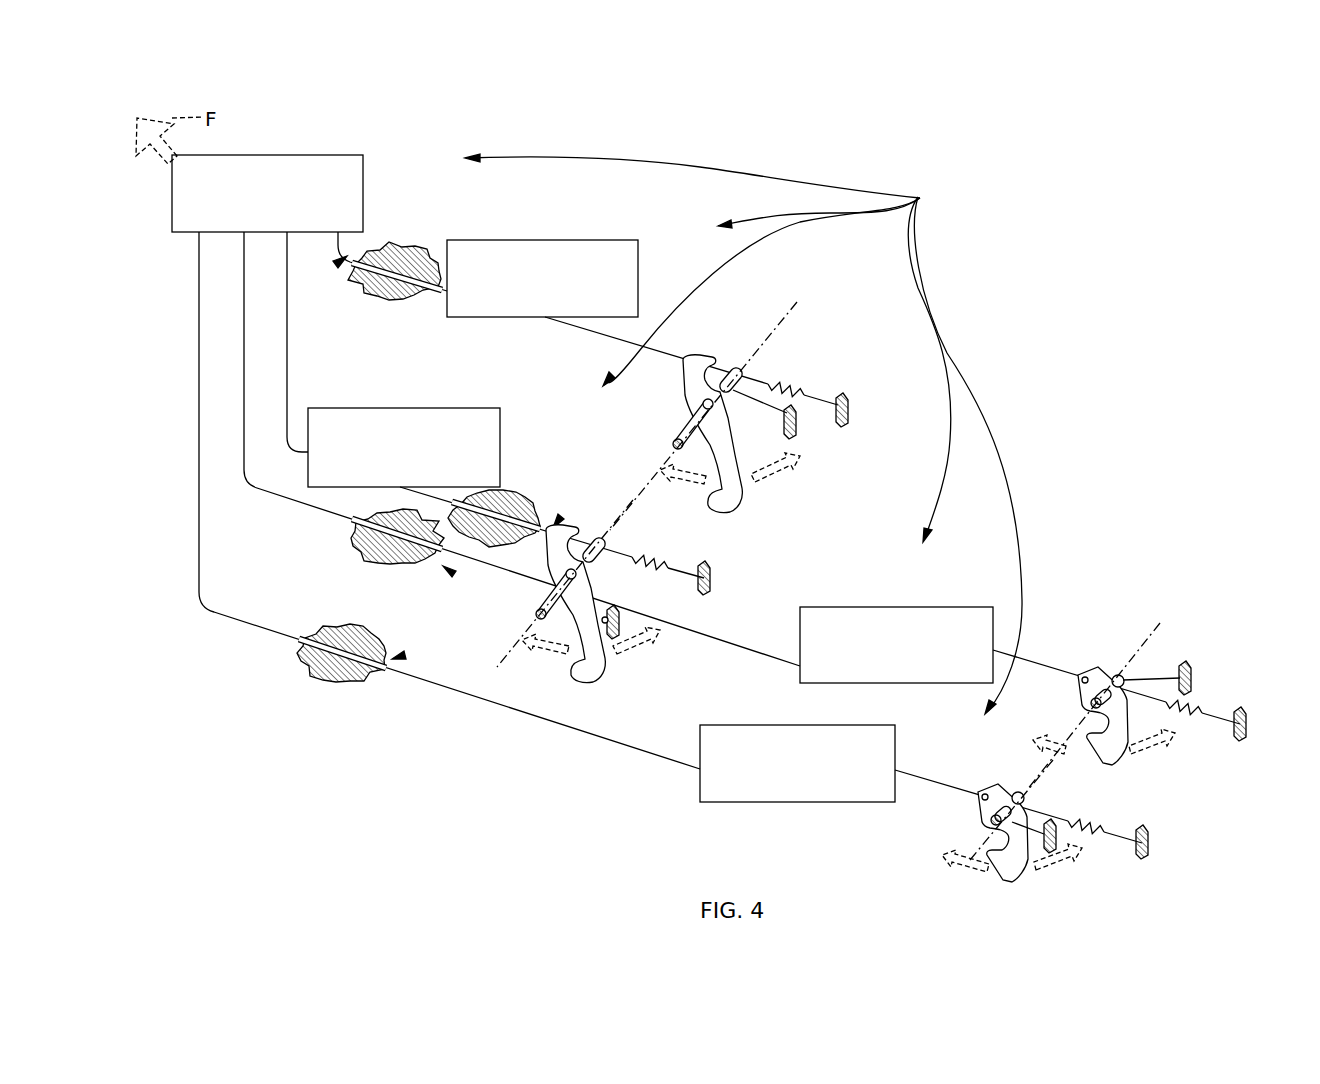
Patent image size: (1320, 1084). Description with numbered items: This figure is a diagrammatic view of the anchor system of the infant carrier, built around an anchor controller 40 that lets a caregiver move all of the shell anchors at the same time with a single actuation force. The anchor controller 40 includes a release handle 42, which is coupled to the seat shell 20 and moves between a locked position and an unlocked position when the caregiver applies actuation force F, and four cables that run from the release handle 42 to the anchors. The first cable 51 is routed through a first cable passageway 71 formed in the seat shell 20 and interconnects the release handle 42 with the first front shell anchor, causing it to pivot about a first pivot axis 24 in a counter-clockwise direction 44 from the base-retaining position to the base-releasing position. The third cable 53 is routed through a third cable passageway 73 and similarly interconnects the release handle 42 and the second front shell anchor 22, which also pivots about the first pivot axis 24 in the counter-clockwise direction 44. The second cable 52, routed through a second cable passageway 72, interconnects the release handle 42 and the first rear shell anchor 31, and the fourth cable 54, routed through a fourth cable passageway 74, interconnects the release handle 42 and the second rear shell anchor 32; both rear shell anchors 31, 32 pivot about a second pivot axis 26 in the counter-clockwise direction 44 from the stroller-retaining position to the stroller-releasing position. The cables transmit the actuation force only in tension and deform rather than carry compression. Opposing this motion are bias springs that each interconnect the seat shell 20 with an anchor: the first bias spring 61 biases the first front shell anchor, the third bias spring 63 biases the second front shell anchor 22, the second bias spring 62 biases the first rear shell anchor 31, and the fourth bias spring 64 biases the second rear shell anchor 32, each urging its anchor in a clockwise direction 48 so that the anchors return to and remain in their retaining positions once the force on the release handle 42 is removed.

The release handle 42 is at (363, 180).
The anchor controller 40 is at (743, 434).
The fourth cable 54 is at (638, 263).
The second cable 52 is at (500, 435).
The third cable 53 is at (898, 607).
The first cable 51 is at (895, 750).
The seat shell 20 is at (395, 245).
The fourth cable passageway 74 is at (334, 264).
The third cable passageway 73 is at (454, 574).
The second cable passageway 72 is at (561, 517).
The first cable passageway 71 is at (405, 655).
The second rear shell anchor 32 is at (719, 326).
The first rear shell anchor 31 is at (618, 581).
The second front shell anchor 22 is at (1108, 631).
The second pivot axis 26 is at (780, 332).
The first pivot axis 24 is at (1163, 624).
The fourth bias spring 64 is at (800, 390).
The second bias spring 62 is at (648, 560).
The third bias spring 63 is at (1185, 707).
The first bias spring 61 is at (1092, 830).
The clockwise direction 48 is at (663, 485).
The counter-clockwise direction 44 is at (798, 468).